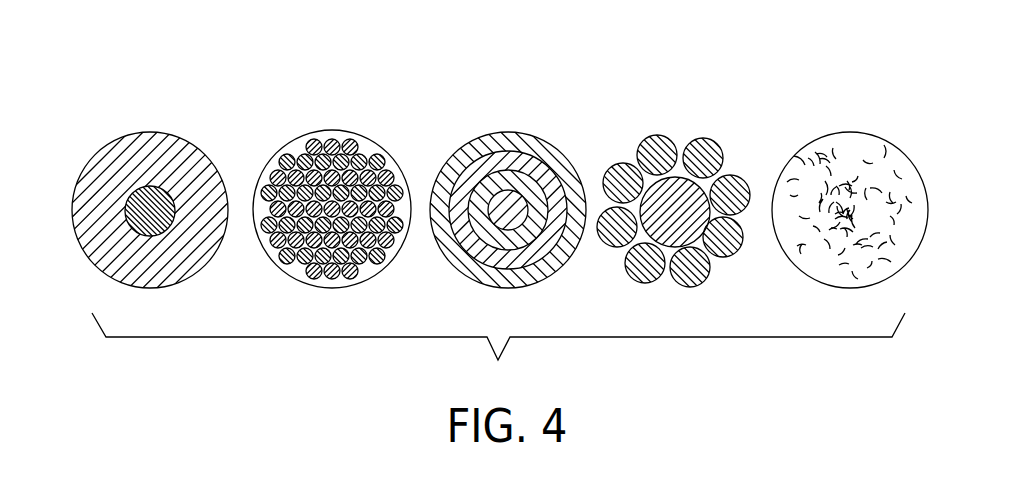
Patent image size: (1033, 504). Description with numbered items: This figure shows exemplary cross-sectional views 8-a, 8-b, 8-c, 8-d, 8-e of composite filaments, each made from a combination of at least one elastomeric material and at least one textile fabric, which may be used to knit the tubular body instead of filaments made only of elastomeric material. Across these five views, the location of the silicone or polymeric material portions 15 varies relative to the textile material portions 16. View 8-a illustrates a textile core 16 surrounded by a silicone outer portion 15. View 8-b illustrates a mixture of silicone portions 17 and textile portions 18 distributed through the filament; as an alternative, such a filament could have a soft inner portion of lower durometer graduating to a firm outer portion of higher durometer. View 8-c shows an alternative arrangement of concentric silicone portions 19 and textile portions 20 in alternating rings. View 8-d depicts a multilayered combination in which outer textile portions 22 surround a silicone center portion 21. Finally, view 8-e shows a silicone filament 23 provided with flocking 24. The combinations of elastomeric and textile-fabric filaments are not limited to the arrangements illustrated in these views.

The cross-sectional view 8-a is at (150, 188).
The cross-sectional view 8-b is at (331, 181).
The cross-sectional view 8-c is at (508, 188).
The cross-sectional view 8-d is at (664, 181).
The cross-sectional view 8-e is at (831, 163).
The silicone outer portion 15 is at (165, 148).
The textile core 16 is at (130, 227).
The silicone portions 17 is at (328, 130).
The textile portions 18 is at (257, 233).
The concentric silicone portions 19 is at (510, 158).
The concentric textile portions 20 is at (453, 250).
The silicone center portion 21 is at (655, 227).
The outer textile portions 22 is at (657, 152).
The silicone filament 23 is at (838, 157).
The flocking 24 is at (877, 148).